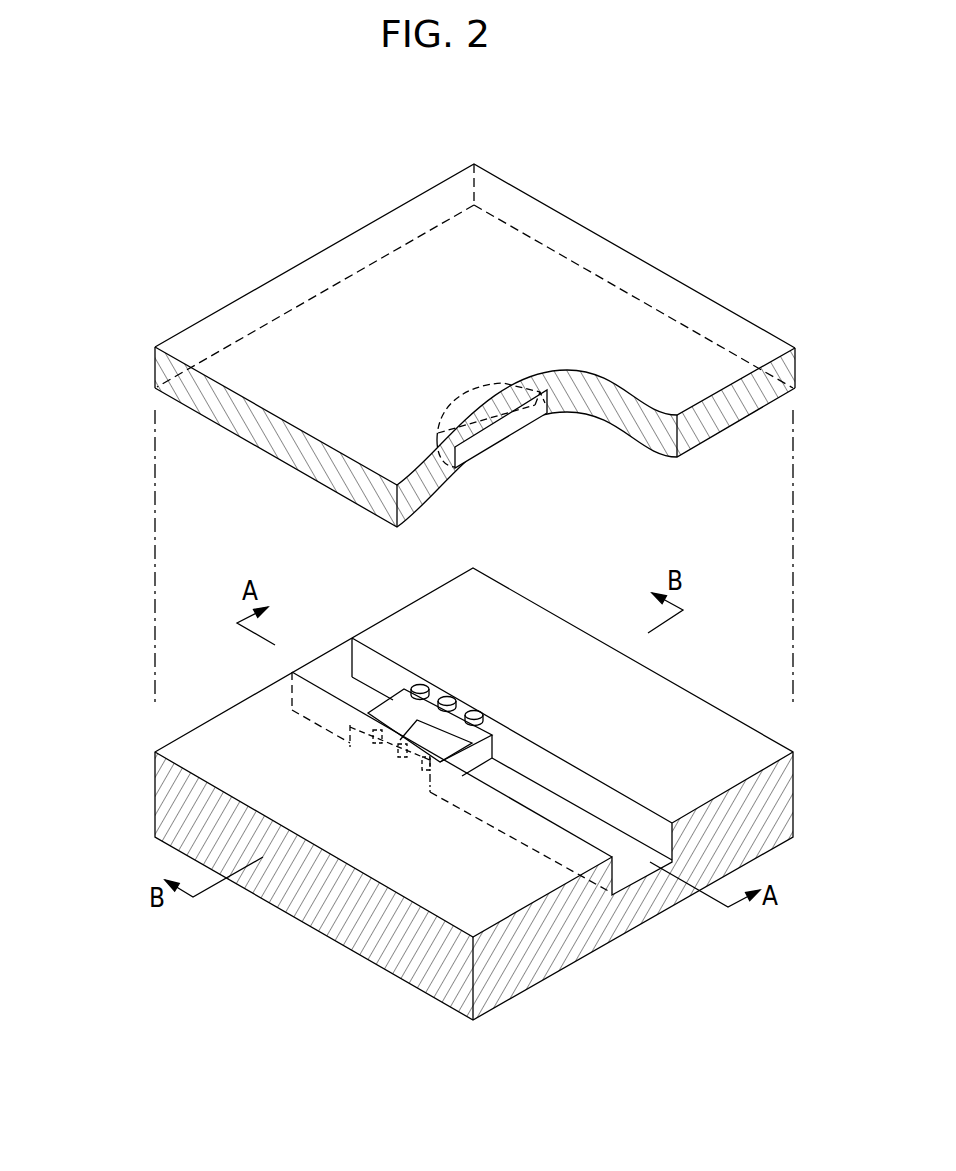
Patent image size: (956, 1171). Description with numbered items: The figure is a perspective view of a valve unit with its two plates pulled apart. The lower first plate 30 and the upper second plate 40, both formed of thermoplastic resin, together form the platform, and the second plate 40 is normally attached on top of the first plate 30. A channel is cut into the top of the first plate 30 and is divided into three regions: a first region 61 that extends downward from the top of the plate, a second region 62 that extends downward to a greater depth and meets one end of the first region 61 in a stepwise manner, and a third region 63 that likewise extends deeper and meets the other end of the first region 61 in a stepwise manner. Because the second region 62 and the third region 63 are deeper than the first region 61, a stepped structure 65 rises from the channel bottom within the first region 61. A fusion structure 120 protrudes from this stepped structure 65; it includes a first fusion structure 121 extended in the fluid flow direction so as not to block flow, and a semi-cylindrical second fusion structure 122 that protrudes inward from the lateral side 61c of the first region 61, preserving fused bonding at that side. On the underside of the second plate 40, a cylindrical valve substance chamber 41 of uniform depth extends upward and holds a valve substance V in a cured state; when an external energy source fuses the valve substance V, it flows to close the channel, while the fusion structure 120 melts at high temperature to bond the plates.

The first plate 30 is at (167, 797).
The second plate 40 is at (257, 303).
The valve substance chamber 41 is at (532, 425).
The valve substance V is at (472, 452).
The first region 61 is at (494, 742).
The lateral side 61c is at (447, 698).
The second region 62 is at (345, 693).
The third region 63 is at (550, 807).
The stepped structure 65 is at (398, 720).
The fusion structure 120 is at (405, 702).
The first fusion structure 121 is at (473, 750).
The second fusion structure 122 is at (419, 686).